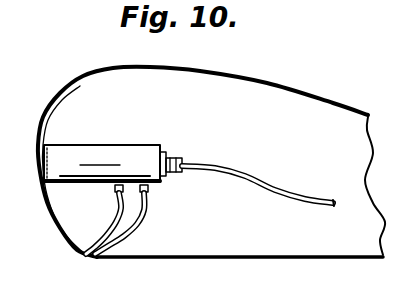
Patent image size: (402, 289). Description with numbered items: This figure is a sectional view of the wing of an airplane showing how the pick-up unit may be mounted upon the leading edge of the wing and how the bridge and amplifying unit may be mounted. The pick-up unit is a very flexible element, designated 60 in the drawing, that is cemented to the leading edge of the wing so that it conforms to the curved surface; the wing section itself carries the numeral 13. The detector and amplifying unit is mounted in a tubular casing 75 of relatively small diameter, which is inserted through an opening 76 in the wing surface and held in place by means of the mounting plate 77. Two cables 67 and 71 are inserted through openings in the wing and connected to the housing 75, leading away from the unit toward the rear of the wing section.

The housing 60 is at (51, 104).
The body 13 is at (362, 0).
The tubular casing 75 is at (113, 157).
The opening 76 is at (50, 142).
The mounting plate 77 is at (38, 195).
The cable 71 is at (114, 208).
The cable 67 is at (143, 216).